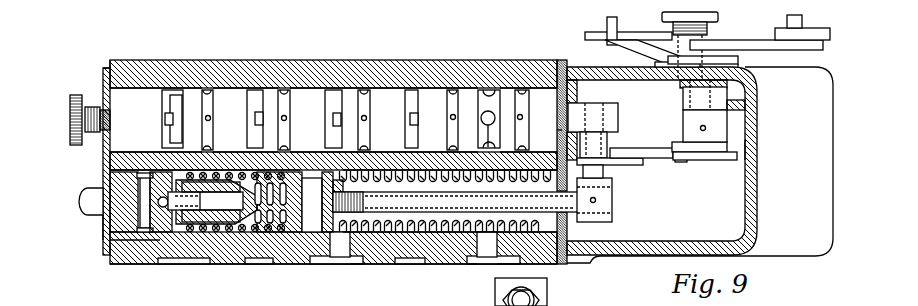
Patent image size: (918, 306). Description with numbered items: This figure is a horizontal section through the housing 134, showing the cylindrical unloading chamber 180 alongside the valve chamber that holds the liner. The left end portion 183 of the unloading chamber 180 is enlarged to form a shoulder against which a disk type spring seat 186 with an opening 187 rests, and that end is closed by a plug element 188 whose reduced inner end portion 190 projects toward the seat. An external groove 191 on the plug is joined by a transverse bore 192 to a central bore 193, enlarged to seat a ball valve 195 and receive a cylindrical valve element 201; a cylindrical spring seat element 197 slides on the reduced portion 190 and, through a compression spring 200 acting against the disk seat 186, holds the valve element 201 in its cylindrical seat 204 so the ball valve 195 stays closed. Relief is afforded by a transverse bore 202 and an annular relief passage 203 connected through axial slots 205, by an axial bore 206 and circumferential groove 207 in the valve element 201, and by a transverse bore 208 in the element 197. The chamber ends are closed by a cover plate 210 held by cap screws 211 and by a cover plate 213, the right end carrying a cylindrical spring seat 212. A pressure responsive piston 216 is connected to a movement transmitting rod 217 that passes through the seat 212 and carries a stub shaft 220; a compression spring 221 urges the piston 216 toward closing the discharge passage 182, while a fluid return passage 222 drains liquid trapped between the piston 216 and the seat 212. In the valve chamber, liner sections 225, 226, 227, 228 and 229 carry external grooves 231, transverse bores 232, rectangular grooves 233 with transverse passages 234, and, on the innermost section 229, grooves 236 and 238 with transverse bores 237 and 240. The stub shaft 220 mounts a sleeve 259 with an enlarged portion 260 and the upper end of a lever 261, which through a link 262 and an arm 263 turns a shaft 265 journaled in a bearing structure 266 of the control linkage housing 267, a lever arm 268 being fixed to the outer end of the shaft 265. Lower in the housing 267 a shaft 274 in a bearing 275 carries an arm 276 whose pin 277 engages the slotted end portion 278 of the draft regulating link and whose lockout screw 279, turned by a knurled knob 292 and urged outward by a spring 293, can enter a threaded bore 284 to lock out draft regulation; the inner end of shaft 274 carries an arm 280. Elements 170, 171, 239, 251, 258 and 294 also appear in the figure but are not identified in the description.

The housing 134 is at (176, 61).
The ring member 170 is at (497, 292).
The bearing ring 171 is at (545, 297).
The unloading chamber 180 is at (410, 252).
The discharge passage 182 is at (338, 257).
The left end portion of unloading chamber 183 is at (270, 236).
The spring seat 186 is at (327, 180).
The opening 187 is at (316, 232).
The plug element 188 is at (107, 218).
The inner end portion 190 is at (200, 234).
The circumferential external groove 191 is at (146, 169).
The transverse bore 192 is at (140, 186).
The central bore 193 is at (158, 203).
The ball valve 195 is at (183, 188).
The cylindrical spring seat element 197 is at (214, 172).
The compression spring 200 is at (288, 172).
The cylindrical valve element 201 is at (236, 230).
The transverse bore 202 is at (183, 230).
The annular relief passage 203 is at (162, 237).
The cylindrical seat 204 is at (258, 201).
The axial slots 205 is at (166, 172).
The axial bore 206 is at (184, 215).
The circumferential groove 207 is at (203, 201).
The transverse bore 208 is at (250, 168).
The cover plate 210 is at (103, 76).
The cap screws 211 is at (80, 200).
The cylindrical spring seat 212 is at (527, 251).
The cover plate 213 is at (565, 262).
The pressure responsive piston 216 is at (345, 178).
The movement transmitting rod 217 is at (463, 210).
The stub shaft 220 is at (598, 222).
The compression spring 221 is at (406, 180).
The fluid return passage 222 is at (475, 260).
The liner section 225 is at (137, 94).
The liner section 226 is at (230, 94).
The liner section 227 is at (304, 94).
The liner section 228 is at (386, 94).
The innermost liner section 229 is at (513, 94).
The circumferential external grooves 231 is at (207, 90).
The transverse bores 232 is at (209, 119).
The circumferential external grooves 233 is at (282, 90).
The transverse passages 234 is at (170, 118).
The circumferential external groove 236 is at (538, 172).
The transverse bore 237 is at (522, 117).
The circumferential external groove 238 is at (485, 86).
The aperture 239 is at (452, 117).
The transverse bores 240 is at (488, 172).
The port 251 is at (562, 130).
The knurled knob 258 is at (72, 135).
The sleeve 259 is at (612, 148).
The enlarged portion 260 is at (630, 97).
The lever 261 is at (622, 165).
The link 262 is at (678, 160).
The arm 263 is at (683, 135).
The shaft 265 is at (708, 160).
The bearing structure 266 is at (684, 108).
The control linkage housing 267 is at (745, 218).
The lever arm 268 is at (592, 37).
The shaft 274 is at (740, 60).
The bearing 275 is at (748, 108).
The arm 276 is at (748, 42).
The pin 277 is at (798, 20).
The slotted end portion 278 is at (822, 50).
The lockout screw 279 is at (668, 35).
The arm 280 is at (748, 150).
The internally threaded bore 284 is at (683, 92).
The knurled knob 292 is at (698, 30).
The spring 293 is at (665, 22).
The plate 294 is at (660, 63).